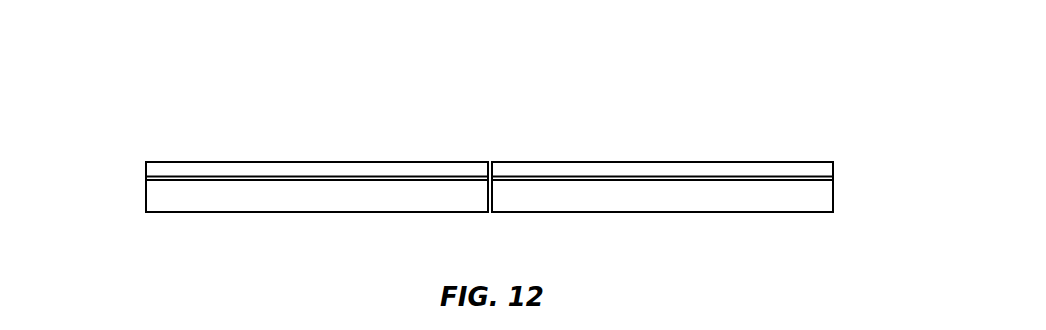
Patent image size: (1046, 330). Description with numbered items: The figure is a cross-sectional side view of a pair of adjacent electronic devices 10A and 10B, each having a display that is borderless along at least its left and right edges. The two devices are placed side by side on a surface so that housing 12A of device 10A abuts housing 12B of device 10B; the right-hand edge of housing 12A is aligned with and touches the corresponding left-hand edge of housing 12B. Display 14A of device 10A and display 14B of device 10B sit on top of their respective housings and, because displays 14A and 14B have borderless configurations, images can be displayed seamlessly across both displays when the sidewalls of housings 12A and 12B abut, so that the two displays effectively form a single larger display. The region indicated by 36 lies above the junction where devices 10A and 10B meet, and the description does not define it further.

The first electronic device 10A is at (243, 137).
The second electronic device 10B is at (618, 130).
The housing of first device 12A is at (288, 197).
The housing of second device 12B is at (608, 197).
The display of first device 14A is at (311, 168).
The display of second device 14B is at (673, 168).
The seam between devices 36 is at (530, 77).